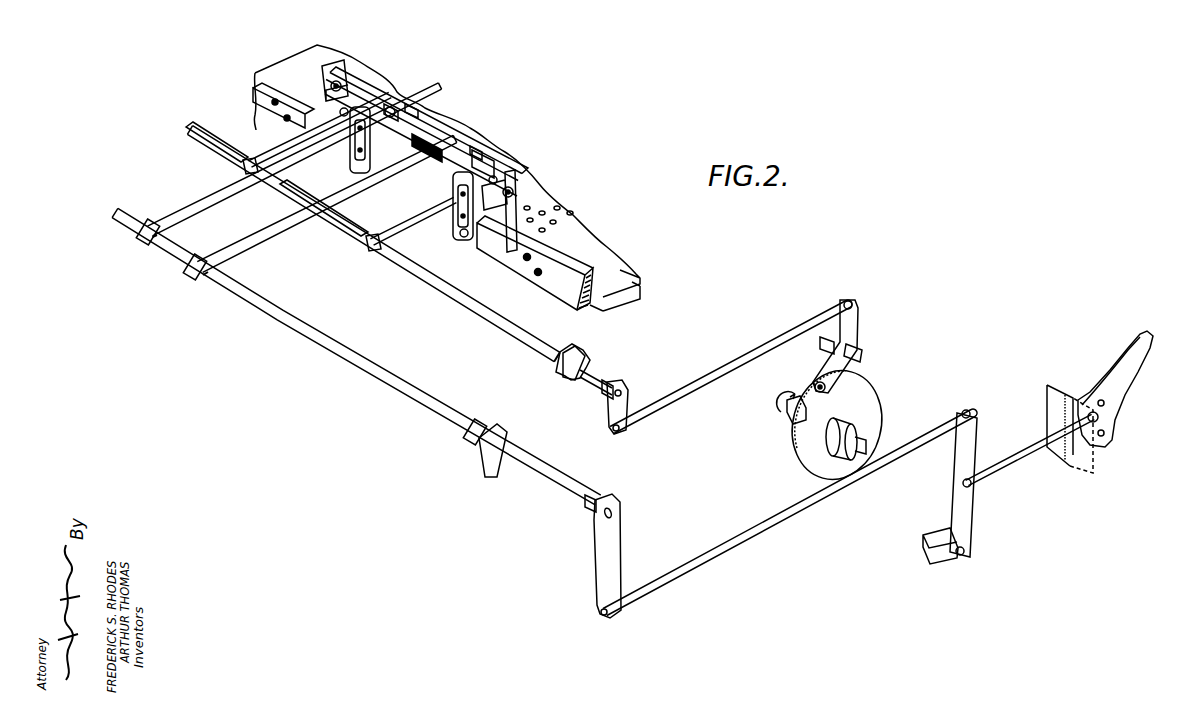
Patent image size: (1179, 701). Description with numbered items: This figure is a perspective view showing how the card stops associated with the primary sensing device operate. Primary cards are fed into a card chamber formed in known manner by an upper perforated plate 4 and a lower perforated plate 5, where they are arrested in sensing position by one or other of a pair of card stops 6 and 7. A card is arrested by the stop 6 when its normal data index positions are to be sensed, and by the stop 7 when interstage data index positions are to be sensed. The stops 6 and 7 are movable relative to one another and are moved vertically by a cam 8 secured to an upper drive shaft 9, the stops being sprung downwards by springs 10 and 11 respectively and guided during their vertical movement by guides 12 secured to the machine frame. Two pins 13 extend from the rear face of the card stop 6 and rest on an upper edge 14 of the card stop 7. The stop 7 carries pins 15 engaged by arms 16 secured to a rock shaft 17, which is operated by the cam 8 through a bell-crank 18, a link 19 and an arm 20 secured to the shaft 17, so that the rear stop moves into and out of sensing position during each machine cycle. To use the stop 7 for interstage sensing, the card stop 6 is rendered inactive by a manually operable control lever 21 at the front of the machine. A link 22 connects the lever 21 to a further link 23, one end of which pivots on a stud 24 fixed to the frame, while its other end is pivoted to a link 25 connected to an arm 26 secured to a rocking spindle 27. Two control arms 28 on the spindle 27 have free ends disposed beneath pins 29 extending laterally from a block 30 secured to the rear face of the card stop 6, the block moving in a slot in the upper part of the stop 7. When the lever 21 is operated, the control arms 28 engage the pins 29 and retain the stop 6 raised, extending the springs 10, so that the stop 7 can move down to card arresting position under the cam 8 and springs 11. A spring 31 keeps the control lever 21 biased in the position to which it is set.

The upper perforated plate 4 is at (620, 277).
The lower perforated plate 5 is at (627, 297).
The card stop 6 is at (453, 137).
The card stop 7 is at (478, 175).
The cam 8 is at (870, 395).
The upper drive shaft 9 is at (857, 438).
The springs 10 is at (360, 112).
The springs 11 is at (386, 114).
The guides 12 is at (287, 120).
The pins 13 is at (332, 80).
The upper edge 14 is at (333, 80).
The pins 15 is at (346, 110).
The arms 16 is at (257, 152).
The rock shaft 17 is at (473, 311).
The bell-crank 18 is at (850, 323).
The link 19 is at (797, 325).
The arm 20 is at (606, 405).
The control lever 21 is at (1140, 350).
The link 22 is at (1037, 440).
The link 23 is at (963, 508).
The stud 24 is at (947, 550).
The link 25 is at (733, 540).
The arm 26 is at (603, 570).
The rocking spindle 27 is at (547, 487).
The control arms 28 is at (263, 220).
The pins 29 is at (392, 115).
The block 30 is at (413, 112).
The spring 31 is at (1057, 443).